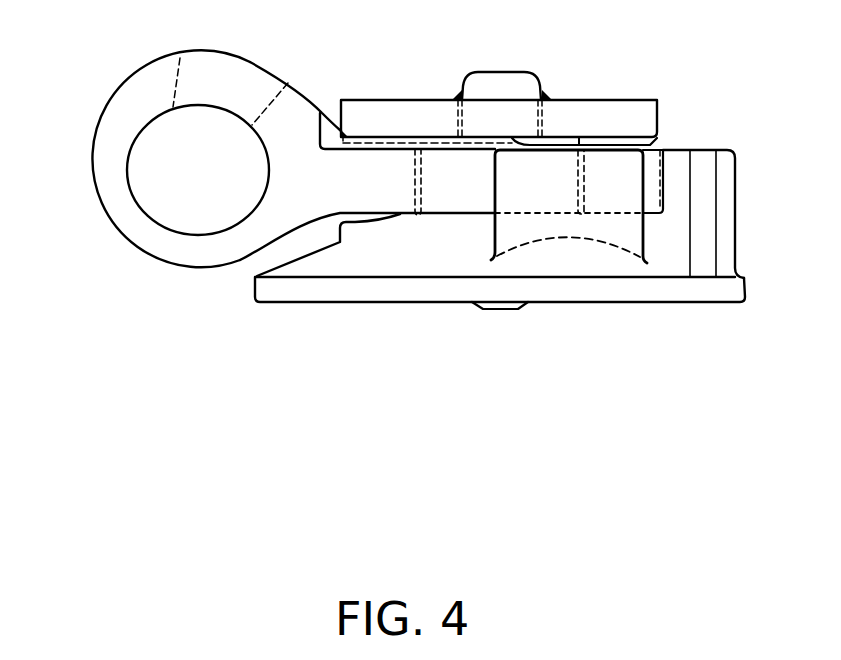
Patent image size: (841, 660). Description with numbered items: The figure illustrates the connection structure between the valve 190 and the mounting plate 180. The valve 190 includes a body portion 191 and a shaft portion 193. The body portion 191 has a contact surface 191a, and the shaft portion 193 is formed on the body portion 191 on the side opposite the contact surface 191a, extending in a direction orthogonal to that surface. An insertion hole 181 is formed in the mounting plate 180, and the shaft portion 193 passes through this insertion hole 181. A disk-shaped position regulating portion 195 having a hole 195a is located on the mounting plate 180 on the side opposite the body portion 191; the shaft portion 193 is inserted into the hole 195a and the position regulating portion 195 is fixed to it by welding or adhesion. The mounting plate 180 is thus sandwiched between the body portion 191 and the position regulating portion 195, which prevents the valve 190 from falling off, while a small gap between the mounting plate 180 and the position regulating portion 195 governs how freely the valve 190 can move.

The mounting plate 180 is at (118, 89).
The insertion hole 181 is at (422, 197).
The valve 190 is at (803, 244).
The body portion 191 is at (747, 291).
The contact surface 191a is at (680, 303).
The shaft portion 193 is at (583, 172).
The position regulating portion 195 is at (657, 118).
The hole 195a is at (465, 120).